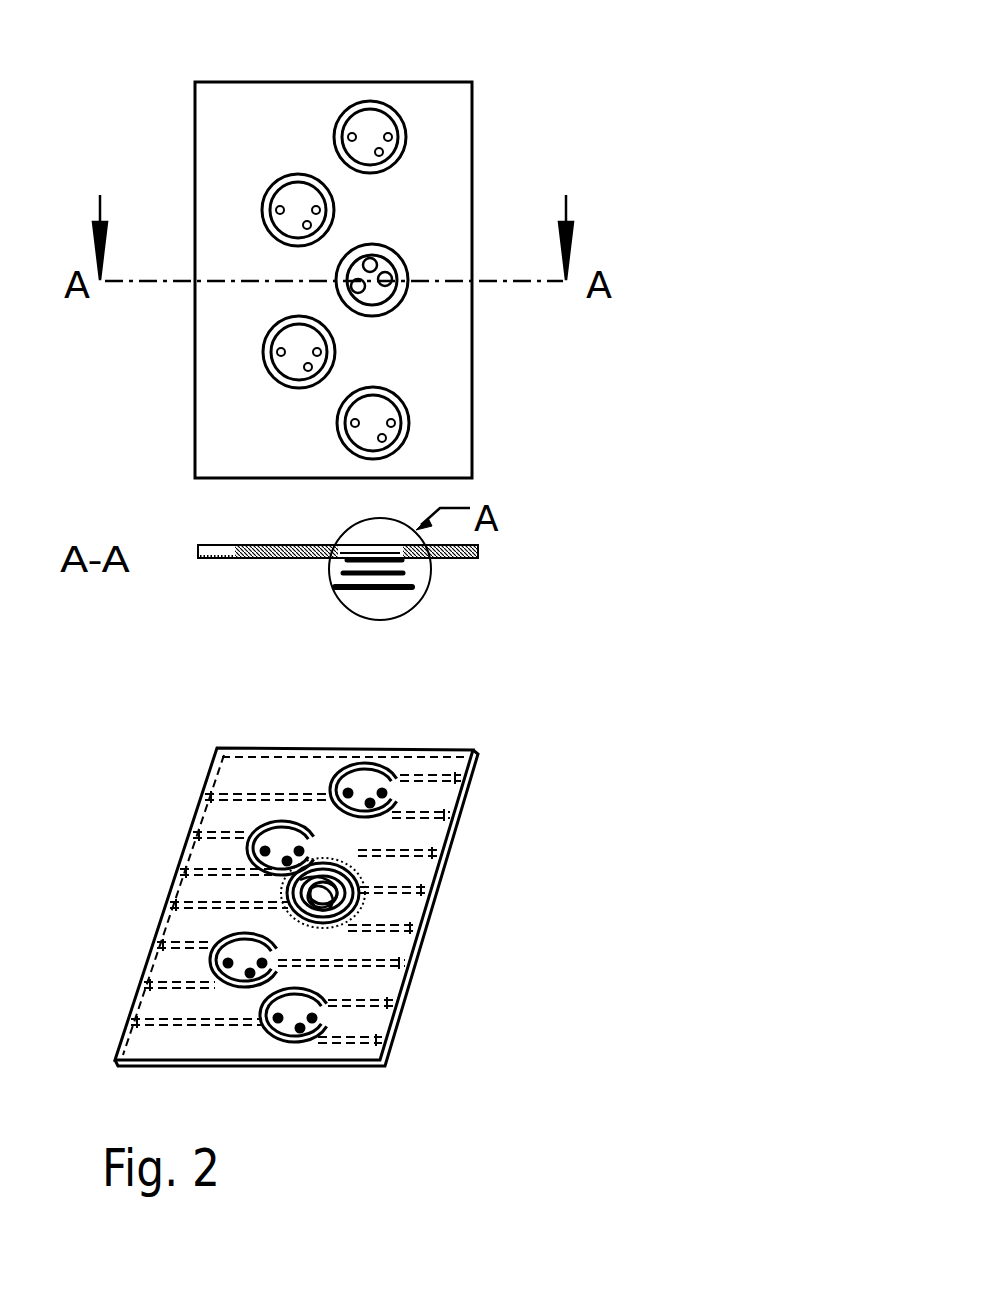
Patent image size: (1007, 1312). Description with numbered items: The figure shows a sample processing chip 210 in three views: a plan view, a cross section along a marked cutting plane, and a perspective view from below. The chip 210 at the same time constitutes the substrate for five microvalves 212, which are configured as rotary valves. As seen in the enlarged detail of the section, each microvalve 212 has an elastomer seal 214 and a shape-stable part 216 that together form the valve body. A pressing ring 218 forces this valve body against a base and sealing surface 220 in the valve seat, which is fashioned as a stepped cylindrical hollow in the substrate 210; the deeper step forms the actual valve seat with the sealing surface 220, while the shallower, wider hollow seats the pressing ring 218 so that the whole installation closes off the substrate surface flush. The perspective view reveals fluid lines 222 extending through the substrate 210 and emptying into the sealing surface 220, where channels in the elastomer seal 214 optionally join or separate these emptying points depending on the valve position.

The sample processing chip 210 is at (473, 108).
The microvalve 212 is at (405, 142).
The elastomer seal 214 is at (348, 560).
The shape-stable part 216 is at (405, 573).
The pressing ring 218 is at (345, 588).
The base and sealing surface 220 is at (372, 783).
The fluid line 222 is at (240, 797).